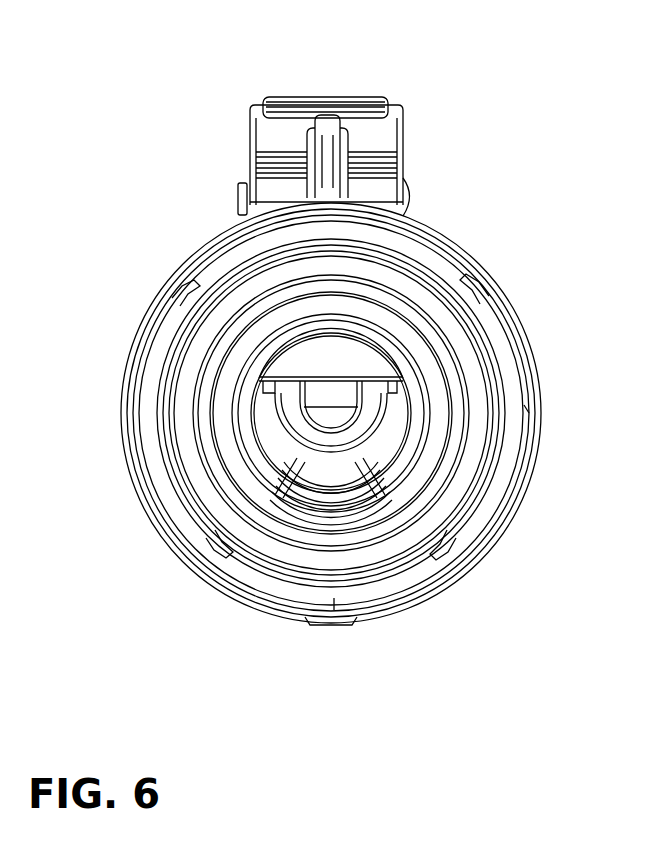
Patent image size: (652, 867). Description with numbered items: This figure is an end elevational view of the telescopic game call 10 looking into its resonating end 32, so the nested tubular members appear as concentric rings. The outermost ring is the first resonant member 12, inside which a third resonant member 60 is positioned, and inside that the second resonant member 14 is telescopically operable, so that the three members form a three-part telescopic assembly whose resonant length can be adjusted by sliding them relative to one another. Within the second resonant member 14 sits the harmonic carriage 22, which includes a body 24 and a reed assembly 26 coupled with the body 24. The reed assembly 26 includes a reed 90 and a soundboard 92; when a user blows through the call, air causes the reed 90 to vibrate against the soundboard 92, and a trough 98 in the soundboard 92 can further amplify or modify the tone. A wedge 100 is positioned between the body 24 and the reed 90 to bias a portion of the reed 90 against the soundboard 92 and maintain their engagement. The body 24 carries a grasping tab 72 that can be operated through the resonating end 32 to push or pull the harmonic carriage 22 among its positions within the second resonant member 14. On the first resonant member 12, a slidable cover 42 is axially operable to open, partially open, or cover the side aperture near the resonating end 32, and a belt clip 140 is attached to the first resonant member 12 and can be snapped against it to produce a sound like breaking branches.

The telescopic game call 10 is at (558, 286).
The first resonant member 12 is at (460, 254).
The second resonant member 14 is at (192, 430).
The harmonic carriage 22 is at (452, 438).
The body 24 is at (437, 383).
The reed assembly 26 is at (263, 363).
The resonating end 32 is at (452, 540).
The slidable cover 42 is at (253, 607).
The third resonant member 60 is at (492, 483).
The grasping tab 72 is at (291, 507).
The reed 90 is at (300, 338).
The soundboard 92 is at (345, 437).
The trough 98 is at (324, 417).
The wedge 100 is at (355, 350).
The belt clip 140 is at (288, 98).